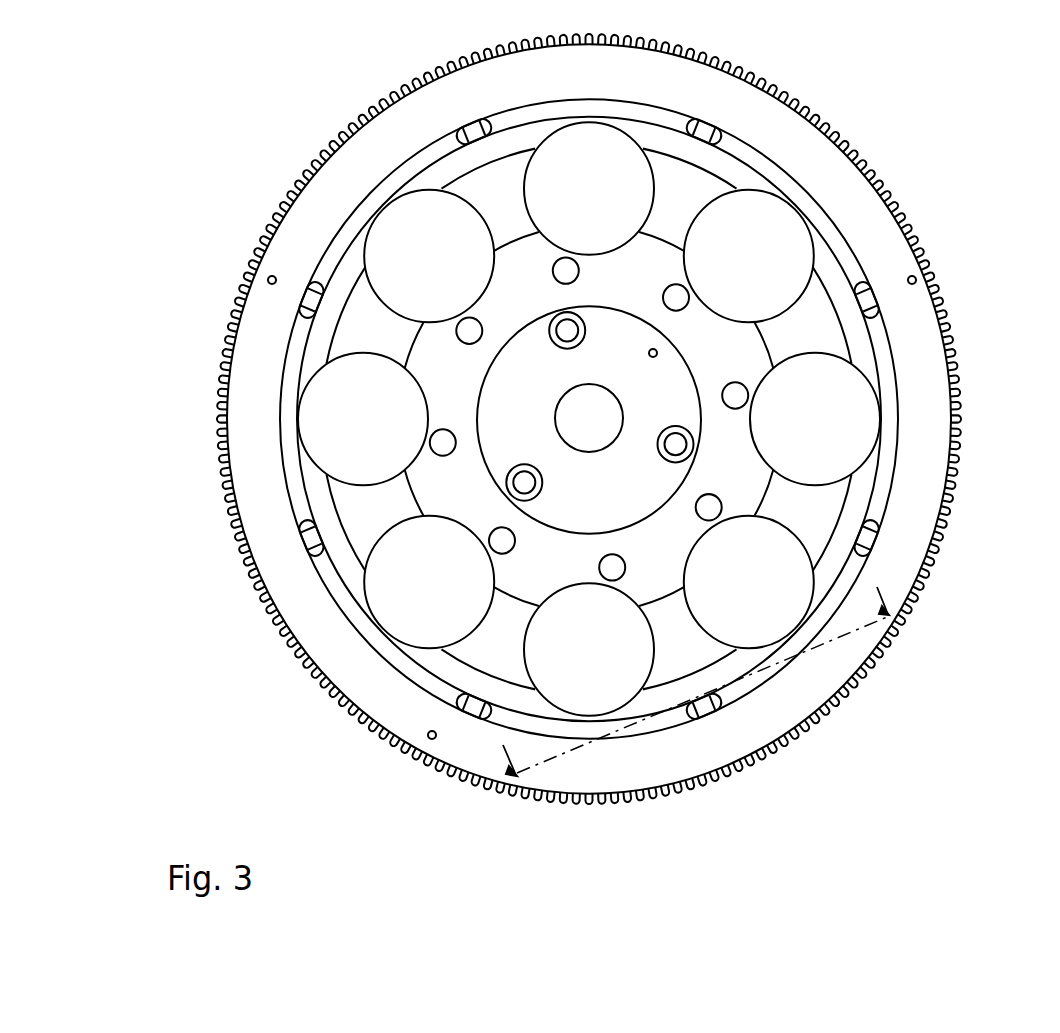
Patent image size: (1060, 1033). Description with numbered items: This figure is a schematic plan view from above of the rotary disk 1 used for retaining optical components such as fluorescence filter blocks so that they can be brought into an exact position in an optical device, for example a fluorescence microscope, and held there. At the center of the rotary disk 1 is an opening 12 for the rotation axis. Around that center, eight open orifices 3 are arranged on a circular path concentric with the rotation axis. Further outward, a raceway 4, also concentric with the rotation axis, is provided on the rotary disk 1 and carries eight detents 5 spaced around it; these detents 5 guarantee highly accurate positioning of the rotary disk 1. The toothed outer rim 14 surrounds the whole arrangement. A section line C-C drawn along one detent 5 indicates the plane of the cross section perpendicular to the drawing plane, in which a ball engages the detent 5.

The rotary disk 1 is at (223, 103).
The open orifices 3 is at (588, 163).
The raceway 4 is at (790, 185).
The detents 5 is at (300, 300).
The opening 12 is at (577, 410).
The starter ring gear teeth 14 is at (870, 670).